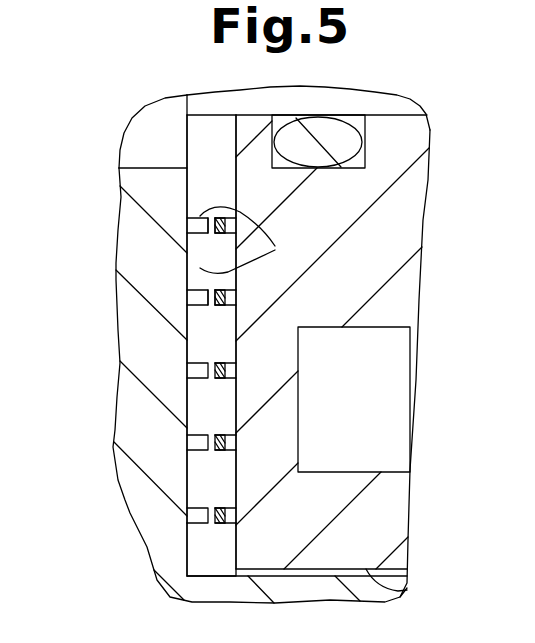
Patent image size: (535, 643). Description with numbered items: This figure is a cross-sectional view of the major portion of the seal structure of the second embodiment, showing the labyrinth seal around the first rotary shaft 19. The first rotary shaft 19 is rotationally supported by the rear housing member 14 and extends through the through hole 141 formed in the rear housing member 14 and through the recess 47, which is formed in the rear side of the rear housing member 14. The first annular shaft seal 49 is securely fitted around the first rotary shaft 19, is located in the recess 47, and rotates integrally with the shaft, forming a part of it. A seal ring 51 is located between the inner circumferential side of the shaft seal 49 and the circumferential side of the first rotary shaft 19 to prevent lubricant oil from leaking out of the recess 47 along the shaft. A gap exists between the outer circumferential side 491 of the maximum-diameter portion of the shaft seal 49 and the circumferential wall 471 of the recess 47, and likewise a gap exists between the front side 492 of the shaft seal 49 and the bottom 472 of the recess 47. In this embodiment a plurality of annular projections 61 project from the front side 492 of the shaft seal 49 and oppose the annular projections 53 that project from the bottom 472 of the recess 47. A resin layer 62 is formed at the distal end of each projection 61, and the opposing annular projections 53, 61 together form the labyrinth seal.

The rear housing member 14 is at (125, 430).
The through hole 141 is at (143, 168).
The first rotary shaft 19 is at (406, 103).
The recess 47 is at (73, 532).
The circumferential wall 471 is at (212, 576).
The bottom 472 is at (192, 540).
The first annular shaft seal 49 is at (397, 498).
The outer circumferential side 491 is at (400, 590).
The front side 492 is at (316, 168).
The seal ring 51 is at (358, 141).
The annular projections 53 is at (254, 240).
The annular projections 61 is at (228, 237).
The resin layer 62 is at (213, 233).